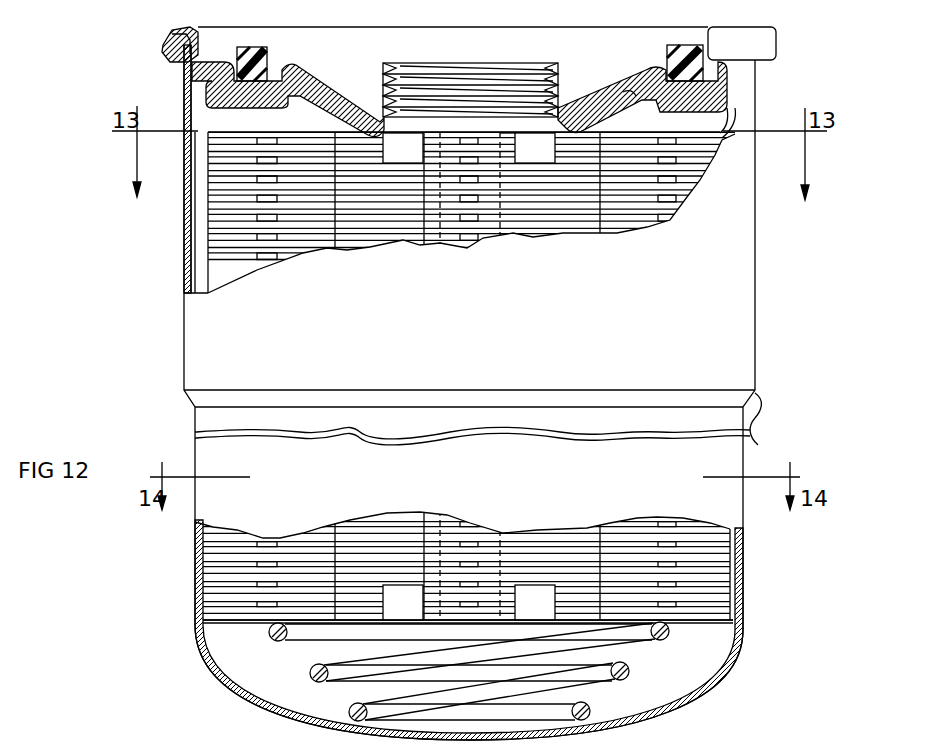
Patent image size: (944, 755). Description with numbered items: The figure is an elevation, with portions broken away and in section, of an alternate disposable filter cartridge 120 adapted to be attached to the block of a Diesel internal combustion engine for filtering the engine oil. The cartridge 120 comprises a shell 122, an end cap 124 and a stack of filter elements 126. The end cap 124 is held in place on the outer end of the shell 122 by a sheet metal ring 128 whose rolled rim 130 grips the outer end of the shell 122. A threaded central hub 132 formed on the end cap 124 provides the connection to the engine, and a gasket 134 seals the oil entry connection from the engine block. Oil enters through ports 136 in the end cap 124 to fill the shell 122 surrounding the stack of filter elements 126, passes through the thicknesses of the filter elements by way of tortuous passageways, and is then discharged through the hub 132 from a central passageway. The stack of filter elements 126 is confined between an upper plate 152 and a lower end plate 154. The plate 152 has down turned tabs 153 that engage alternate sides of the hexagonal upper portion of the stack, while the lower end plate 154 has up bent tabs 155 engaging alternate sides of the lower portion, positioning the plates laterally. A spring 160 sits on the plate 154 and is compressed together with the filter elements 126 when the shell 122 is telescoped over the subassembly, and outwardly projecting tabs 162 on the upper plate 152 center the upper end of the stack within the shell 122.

The disposable filter cartridge 120 is at (775, 310).
The shell 122 is at (184, 328).
The end cap 124 is at (652, 70).
The stack of filter elements 126 is at (208, 227).
The sheet metal ring 128 is at (220, 56).
The rolled rim 130 is at (163, 45).
The threaded central hub 132 is at (368, 95).
The gasket 134 is at (670, 50).
The ports 136 is at (625, 96).
The upper end plate 152 is at (238, 133).
The down turned tabs 153 is at (571, 132).
The lower end plate 154 is at (700, 623).
The up bent tabs 155 is at (372, 595).
The spring 160 is at (622, 680).
The outwardly projecting tabs 162 is at (495, 133).